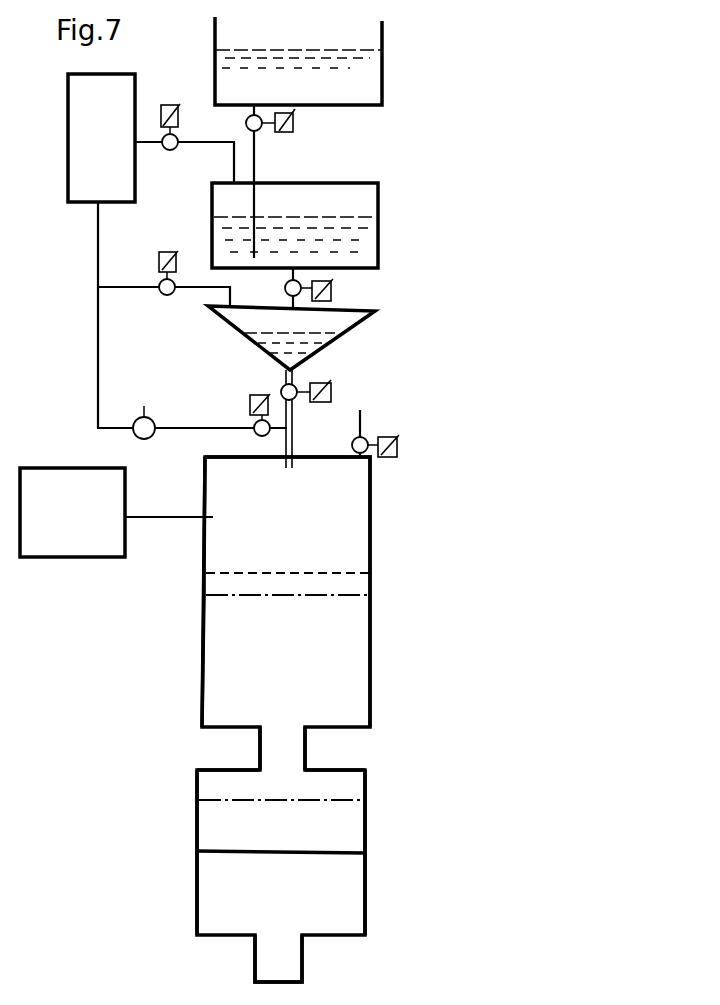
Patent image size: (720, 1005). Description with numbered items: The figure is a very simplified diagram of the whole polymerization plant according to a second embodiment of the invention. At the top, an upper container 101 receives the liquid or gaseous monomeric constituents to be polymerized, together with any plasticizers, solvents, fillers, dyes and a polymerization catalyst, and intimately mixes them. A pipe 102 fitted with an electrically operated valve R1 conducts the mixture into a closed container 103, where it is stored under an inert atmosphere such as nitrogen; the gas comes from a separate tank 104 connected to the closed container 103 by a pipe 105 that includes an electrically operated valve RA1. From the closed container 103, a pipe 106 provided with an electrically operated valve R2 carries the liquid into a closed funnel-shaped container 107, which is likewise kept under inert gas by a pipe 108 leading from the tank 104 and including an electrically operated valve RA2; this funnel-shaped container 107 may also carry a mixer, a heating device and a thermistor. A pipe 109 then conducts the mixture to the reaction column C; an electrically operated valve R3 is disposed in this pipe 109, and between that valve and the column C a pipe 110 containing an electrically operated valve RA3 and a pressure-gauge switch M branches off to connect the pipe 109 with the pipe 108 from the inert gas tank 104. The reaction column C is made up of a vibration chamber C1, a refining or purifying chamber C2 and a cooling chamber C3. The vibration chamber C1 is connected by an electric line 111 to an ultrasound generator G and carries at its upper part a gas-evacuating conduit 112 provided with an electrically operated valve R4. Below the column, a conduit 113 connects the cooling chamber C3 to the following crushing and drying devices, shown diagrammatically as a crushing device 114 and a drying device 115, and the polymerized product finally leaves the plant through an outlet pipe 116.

The upper container 101 is at (382, 51).
The pipe 102 is at (254, 170).
The closed container 103 is at (378, 232).
The separate tank 104 is at (76, 114).
The pipe 105 is at (207, 141).
The pipe 106 is at (293, 276).
The funnel-shaped container 107 is at (350, 330).
The pipe 108 is at (99, 272).
The pipe 109 is at (293, 420).
The pipe 110 is at (98, 383).
The electric line 111 is at (155, 520).
The gas-evacuating conduit 112 is at (363, 416).
The conduit 113 is at (305, 752).
The crushing device 114 is at (365, 822).
The drying device 115 is at (363, 889).
The outlet pipe 116 is at (302, 966).
The electrically operated valve R1 is at (259, 130).
The electrically operated valve R2 is at (285, 290).
The electrically operated valve R3 is at (283, 387).
The electrically operated valve R4 is at (352, 447).
The electrically operated valve RA1 is at (171, 150).
The electrically operated valve RA2 is at (167, 296).
The electrically operated valve RA3 is at (255, 434).
The pressure-gauge switch M is at (144, 413).
The ultrasound generator G is at (68, 557).
The reaction column C is at (387, 552).
The vibration chamber C1 is at (370, 518).
The refining chamber C2 is at (370, 590).
The cooling chamber C3 is at (365, 652).